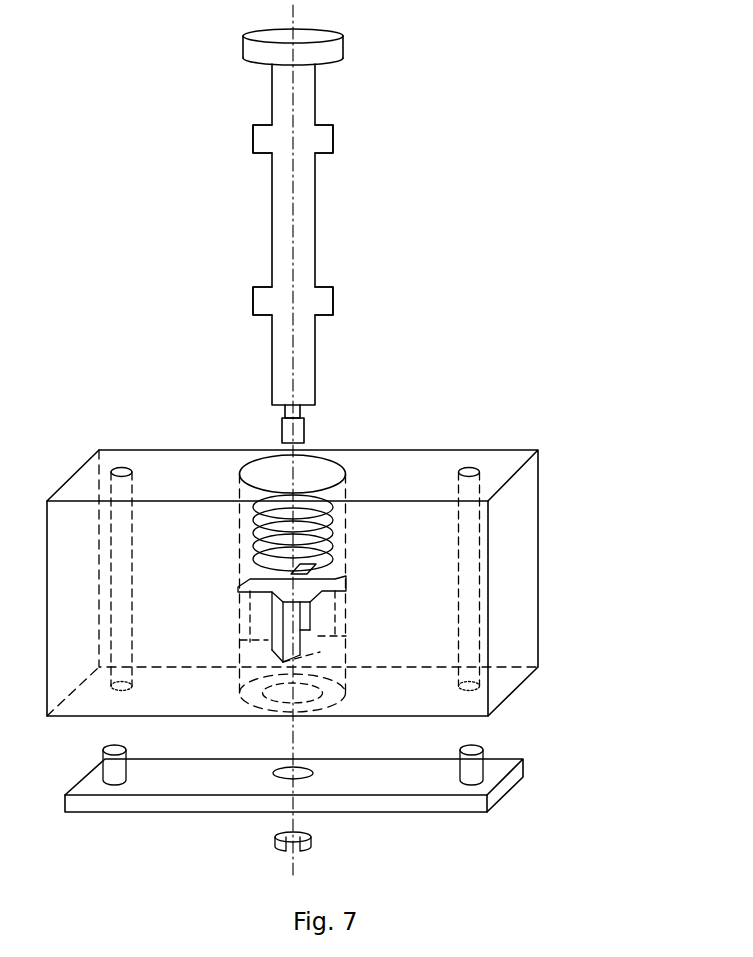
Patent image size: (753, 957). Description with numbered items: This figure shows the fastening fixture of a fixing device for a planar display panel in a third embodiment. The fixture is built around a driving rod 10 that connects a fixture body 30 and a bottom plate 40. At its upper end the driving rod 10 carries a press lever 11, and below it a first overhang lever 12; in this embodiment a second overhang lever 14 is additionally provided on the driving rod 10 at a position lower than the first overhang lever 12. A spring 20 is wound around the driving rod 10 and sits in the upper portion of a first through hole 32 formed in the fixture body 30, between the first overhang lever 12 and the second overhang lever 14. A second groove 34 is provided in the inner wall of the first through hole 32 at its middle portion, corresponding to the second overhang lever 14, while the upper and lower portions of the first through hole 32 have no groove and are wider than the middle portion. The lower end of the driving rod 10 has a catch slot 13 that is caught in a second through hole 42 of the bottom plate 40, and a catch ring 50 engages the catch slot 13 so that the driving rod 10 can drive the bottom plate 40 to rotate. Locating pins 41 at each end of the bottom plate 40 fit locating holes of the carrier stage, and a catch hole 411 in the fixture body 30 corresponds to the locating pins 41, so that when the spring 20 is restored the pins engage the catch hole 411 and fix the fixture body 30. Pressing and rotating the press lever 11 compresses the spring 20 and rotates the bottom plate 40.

The driving rod 10 is at (282, 208).
The press lever 11 is at (243, 48).
The first overhang lever 12 is at (262, 140).
The catch slot 13 is at (297, 412).
The second overhang lever 14 is at (268, 302).
The spring 20 is at (335, 543).
The fixture body 30 is at (513, 630).
The first through hole 32 is at (275, 477).
The second groove 34 is at (240, 622).
The bottom plate 40 is at (92, 807).
The locating pins 41 is at (483, 751).
The second through hole 42 is at (307, 772).
The catch ring 50 is at (273, 837).
The catch hole 411 is at (474, 472).